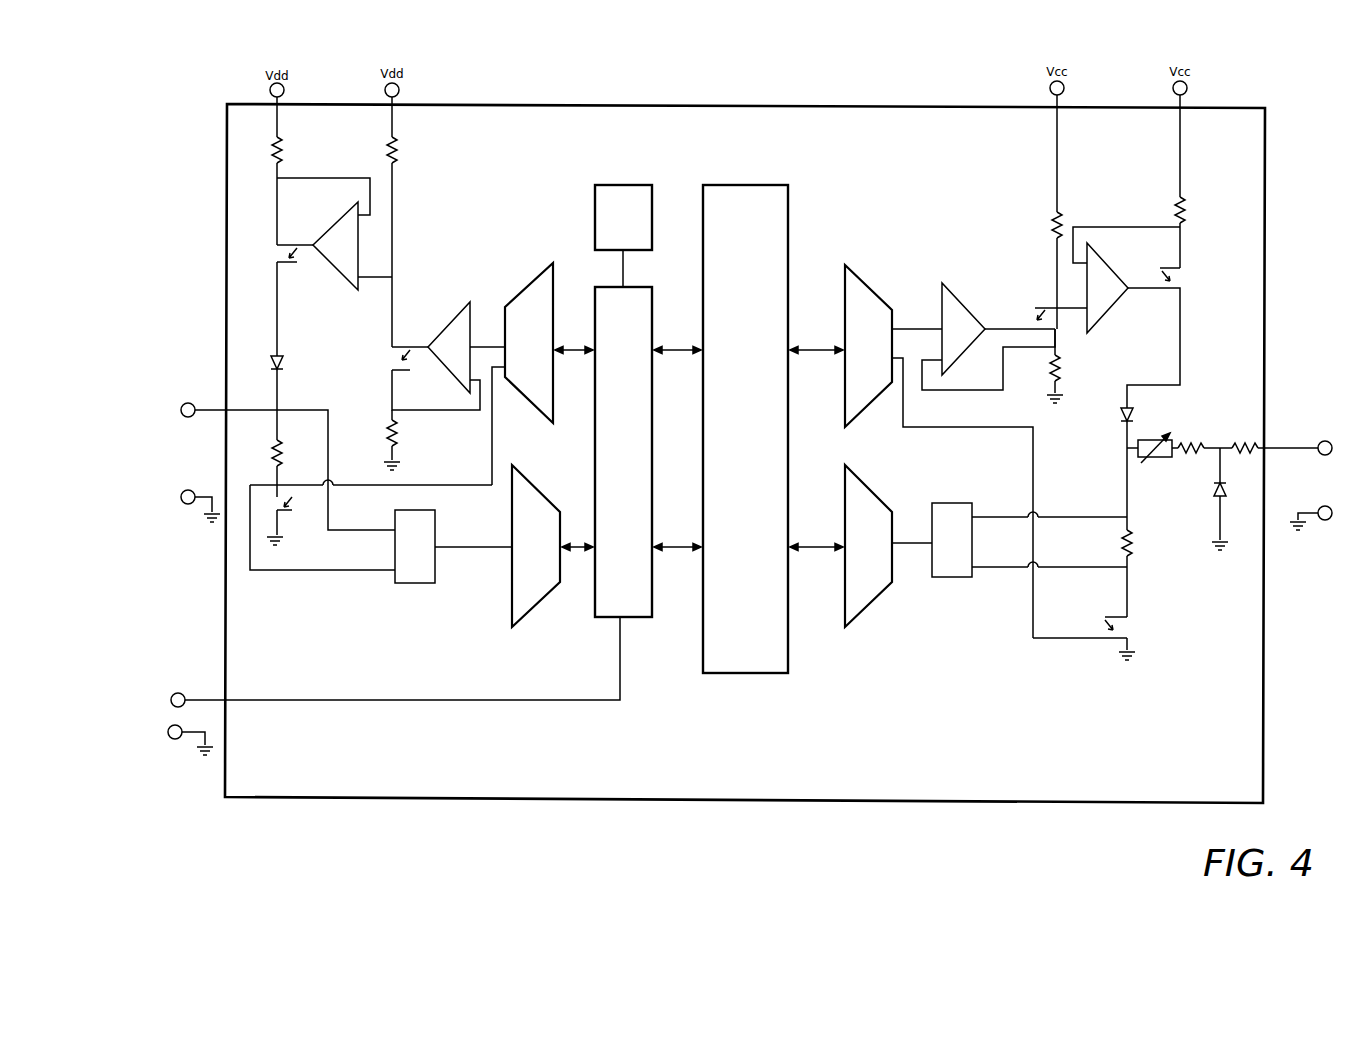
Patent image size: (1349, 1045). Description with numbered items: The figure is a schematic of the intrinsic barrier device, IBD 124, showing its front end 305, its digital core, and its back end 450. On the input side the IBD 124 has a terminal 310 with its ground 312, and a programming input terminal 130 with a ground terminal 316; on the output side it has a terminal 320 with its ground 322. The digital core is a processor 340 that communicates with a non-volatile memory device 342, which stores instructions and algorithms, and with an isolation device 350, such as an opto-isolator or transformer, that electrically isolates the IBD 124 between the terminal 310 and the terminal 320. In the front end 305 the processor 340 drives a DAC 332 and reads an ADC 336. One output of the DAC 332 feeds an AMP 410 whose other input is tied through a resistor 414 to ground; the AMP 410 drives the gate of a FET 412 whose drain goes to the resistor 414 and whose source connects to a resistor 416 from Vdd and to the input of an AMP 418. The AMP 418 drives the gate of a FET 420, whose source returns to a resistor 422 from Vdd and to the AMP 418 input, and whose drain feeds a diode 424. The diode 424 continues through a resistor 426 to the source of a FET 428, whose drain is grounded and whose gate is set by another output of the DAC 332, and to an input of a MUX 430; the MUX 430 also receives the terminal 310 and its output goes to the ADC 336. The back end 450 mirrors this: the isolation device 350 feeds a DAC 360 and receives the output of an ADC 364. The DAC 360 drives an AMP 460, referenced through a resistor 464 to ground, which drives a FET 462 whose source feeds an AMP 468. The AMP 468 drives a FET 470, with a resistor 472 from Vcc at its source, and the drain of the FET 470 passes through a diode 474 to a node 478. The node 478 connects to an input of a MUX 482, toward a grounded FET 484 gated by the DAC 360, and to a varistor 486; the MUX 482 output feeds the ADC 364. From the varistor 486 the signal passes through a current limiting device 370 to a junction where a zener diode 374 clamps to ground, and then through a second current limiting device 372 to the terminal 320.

The intrinsic barrier device (IBD) 124 is at (782, 133).
The programming input terminal 130 is at (378, 662).
The front end 305 is at (442, 210).
The terminal 310 is at (267, 448).
The ground 312 is at (182, 533).
The ground terminal 316 is at (175, 766).
The terminal 320 is at (1306, 427).
The ground 322 is at (1309, 541).
The digital to analog converter (DAC) 332 is at (541, 363).
The analog to digital converter (ADC) 336 is at (549, 566).
The processor 340 is at (636, 358).
The non-volatile memory device (NVM) 342 is at (636, 235).
The isolation device 350 is at (758, 235).
The DAC 360 is at (881, 364).
The ADC 364 is at (881, 566).
The current limiting device 370 is at (1202, 441).
The current limiting device 372 is at (1275, 441).
The zener diode 374 is at (1204, 499).
The AMP 410 is at (468, 355).
The FET 412 is at (436, 380).
The resistor 414 is at (376, 440).
The resistor 416 is at (376, 226).
The AMP 418 is at (356, 255).
The FET 420 is at (295, 300).
The resistor 422 is at (261, 141).
The diode 424 is at (261, 363).
The resistor 426 is at (260, 427).
The FET 428 is at (322, 527).
The multiplexer (MUX) 430 is at (403, 555).
The back end 450 is at (940, 212).
The AMP 460 is at (973, 337).
The FET 462 is at (1053, 303).
The resistor 464 is at (1041, 366).
The AMP 468 is at (1120, 296).
The FET 470 is at (1161, 261).
The resistor 472 is at (1164, 188).
The diode 474 is at (1111, 428).
The node 478 is at (1099, 459).
The MUX 482 is at (940, 554).
The FET 484 is at (1084, 625).
The varistor 486 is at (1155, 455).